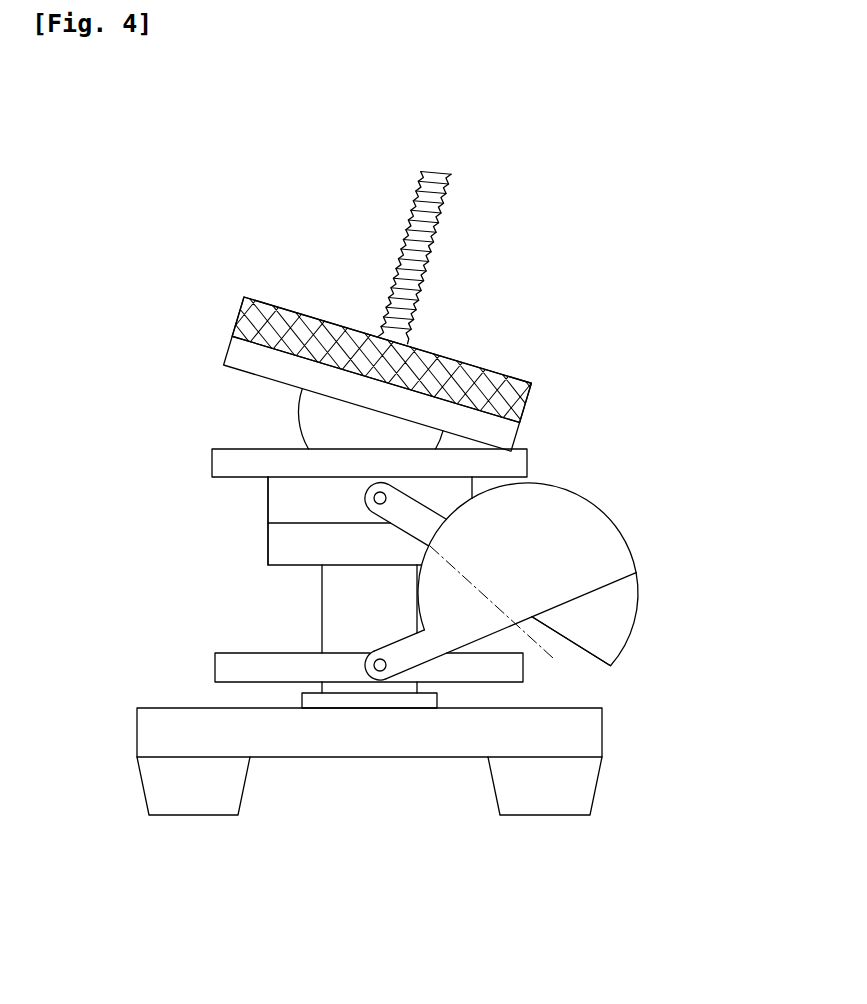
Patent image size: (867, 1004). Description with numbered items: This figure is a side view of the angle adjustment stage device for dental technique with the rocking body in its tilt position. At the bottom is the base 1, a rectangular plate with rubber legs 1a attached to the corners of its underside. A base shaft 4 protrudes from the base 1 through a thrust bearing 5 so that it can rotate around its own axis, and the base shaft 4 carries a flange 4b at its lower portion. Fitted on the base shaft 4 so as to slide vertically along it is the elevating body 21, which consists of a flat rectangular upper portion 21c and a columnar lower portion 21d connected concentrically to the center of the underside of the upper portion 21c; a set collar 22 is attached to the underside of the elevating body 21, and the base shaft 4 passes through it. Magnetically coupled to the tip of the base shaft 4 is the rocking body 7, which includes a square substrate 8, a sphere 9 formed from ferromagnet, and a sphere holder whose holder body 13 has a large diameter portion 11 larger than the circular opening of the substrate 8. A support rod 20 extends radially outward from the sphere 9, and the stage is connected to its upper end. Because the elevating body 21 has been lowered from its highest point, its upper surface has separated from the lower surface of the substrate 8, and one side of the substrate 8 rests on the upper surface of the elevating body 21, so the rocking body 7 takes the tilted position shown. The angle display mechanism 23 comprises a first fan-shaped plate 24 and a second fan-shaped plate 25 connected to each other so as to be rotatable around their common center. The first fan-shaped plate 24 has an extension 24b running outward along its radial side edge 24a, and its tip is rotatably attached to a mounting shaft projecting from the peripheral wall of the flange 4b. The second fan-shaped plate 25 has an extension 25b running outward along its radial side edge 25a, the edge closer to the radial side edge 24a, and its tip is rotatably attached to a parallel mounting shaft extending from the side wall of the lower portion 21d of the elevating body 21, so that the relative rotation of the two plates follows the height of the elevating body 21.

The base 1 is at (158, 716).
The rubber legs 1a is at (157, 782).
The base shaft 4 is at (322, 588).
The flange 4b is at (218, 650).
The thrust bearing 5 is at (302, 700).
The rocking body 7 is at (349, 330).
The substrate 8 is at (228, 345).
The sphere 9 is at (308, 420).
The large diameter portion 11 is at (240, 308).
The holder body 13 is at (273, 312).
The support rod 20 is at (405, 238).
The elevating body 21 is at (266, 481).
The upper portion 21c is at (212, 462).
The lower portion 21d is at (267, 503).
The set collar 22 is at (268, 543).
The angle display mechanism 23 is at (489, 547).
The first fan-shaped plate 24 is at (637, 557).
The radial side edge 24a is at (491, 626).
The extension 24b is at (405, 634).
The second fan-shaped plate 25 is at (640, 592).
The radial side edge 25a is at (472, 575).
The extension 25b is at (415, 518).